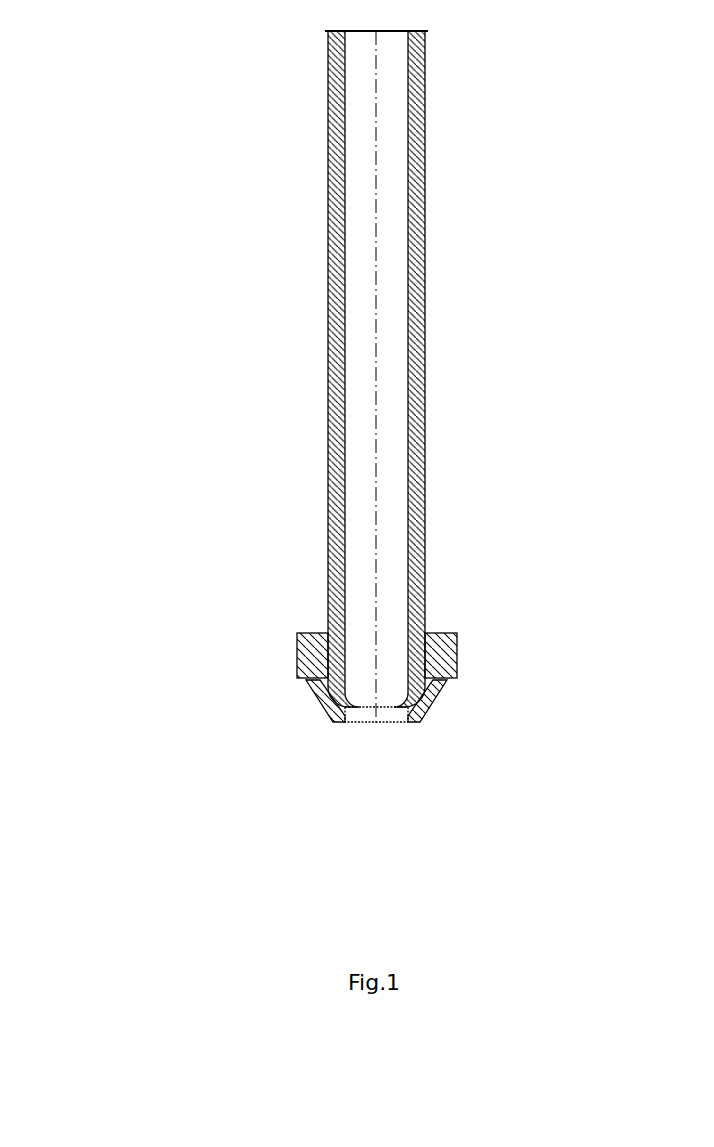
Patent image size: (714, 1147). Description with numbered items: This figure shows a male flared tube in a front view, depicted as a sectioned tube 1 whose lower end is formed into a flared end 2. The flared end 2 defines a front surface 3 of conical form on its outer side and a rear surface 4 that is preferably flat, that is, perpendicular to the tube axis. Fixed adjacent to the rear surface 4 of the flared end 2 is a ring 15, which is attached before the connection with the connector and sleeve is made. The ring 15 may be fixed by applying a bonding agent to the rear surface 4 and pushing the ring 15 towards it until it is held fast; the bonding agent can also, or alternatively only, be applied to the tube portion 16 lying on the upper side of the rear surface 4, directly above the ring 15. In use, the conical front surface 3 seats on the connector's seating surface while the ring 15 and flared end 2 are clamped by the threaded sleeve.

The tube 1 is at (425, 153).
The flared end 2 is at (307, 743).
The front surface 3 is at (423, 713).
The rear surface 4 is at (307, 682).
The ring 15 is at (308, 645).
The tube portion 16 is at (420, 657).